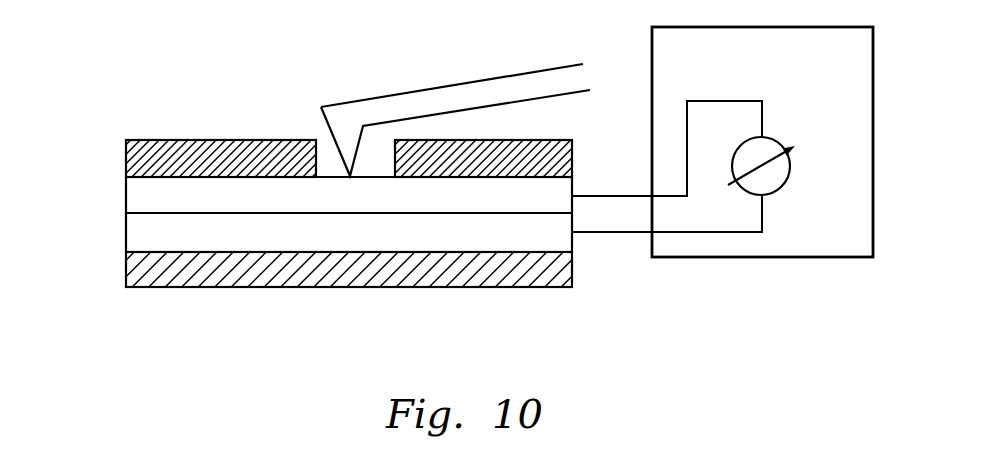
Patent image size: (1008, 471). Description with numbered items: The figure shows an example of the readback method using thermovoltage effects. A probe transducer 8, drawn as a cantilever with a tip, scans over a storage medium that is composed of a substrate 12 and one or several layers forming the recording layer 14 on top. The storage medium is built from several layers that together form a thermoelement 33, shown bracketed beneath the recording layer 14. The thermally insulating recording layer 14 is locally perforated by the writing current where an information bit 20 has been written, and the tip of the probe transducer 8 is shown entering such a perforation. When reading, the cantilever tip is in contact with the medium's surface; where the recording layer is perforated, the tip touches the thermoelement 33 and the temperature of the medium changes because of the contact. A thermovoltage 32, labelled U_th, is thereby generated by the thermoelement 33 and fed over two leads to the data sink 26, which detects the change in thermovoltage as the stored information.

The probe transducer 8 is at (346, 120).
The information bit 20 is at (328, 158).
The recording layer 14 is at (573, 160).
The substrate 12 is at (508, 274).
The thermoelement 33 is at (117, 180).
The thermovoltage 32 is at (828, 140).
The data sink 26 is at (842, 245).